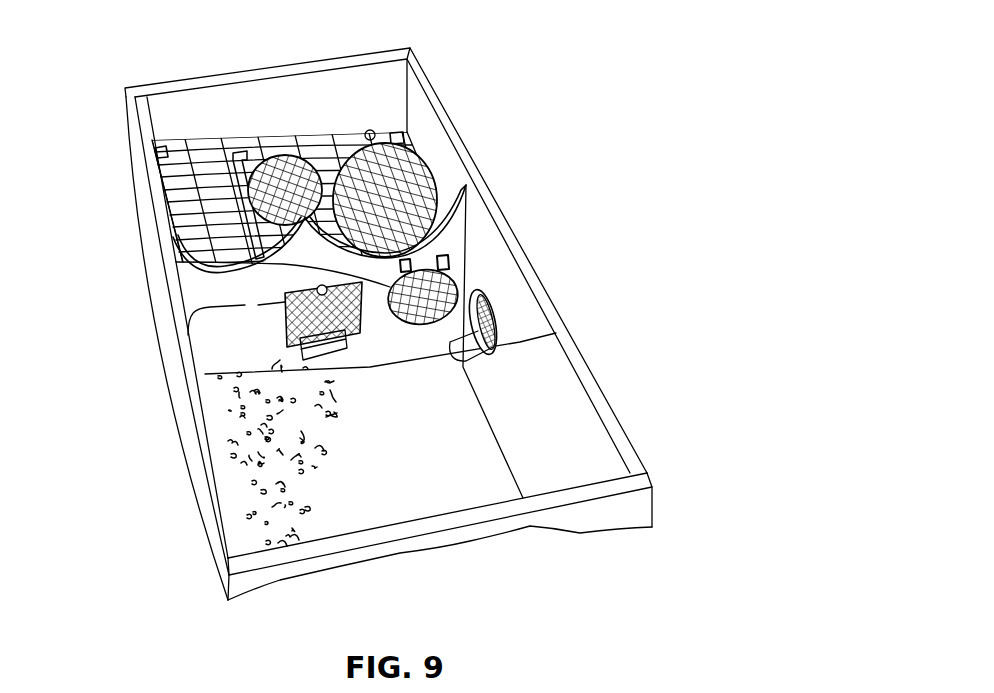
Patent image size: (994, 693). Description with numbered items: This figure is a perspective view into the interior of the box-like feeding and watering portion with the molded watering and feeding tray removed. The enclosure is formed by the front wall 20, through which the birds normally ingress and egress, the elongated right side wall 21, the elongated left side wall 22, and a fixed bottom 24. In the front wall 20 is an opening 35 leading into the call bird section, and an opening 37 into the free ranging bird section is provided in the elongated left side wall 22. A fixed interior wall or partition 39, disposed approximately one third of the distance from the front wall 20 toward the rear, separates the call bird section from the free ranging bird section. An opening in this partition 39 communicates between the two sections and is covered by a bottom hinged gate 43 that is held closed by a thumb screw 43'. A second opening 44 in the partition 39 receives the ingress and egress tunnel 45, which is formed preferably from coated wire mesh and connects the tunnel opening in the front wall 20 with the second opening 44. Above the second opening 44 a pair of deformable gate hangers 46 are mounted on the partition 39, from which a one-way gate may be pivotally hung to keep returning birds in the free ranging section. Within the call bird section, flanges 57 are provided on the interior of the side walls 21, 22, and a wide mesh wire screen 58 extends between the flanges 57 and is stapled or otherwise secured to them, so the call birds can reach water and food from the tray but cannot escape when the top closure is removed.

The front wall 20 is at (594, 507).
The elongated right side wall 21 is at (577, 428).
The elongated left side wall 22 is at (202, 509).
The fixed bottom 24 is at (441, 493).
The opening 35 is at (304, 158).
The opening 37 is at (500, 341).
The interior wall or partition 39 is at (187, 277).
The bottom hinged gate 43 is at (239, 361).
The thumb screw 43' is at (181, 336).
The second opening 44 is at (458, 282).
The ingress and egress tunnel 45 is at (173, 237).
The deformable gate hangers 46 is at (455, 224).
The flanges 57 is at (423, 163).
The wide mesh wire screen 58 is at (207, 148).